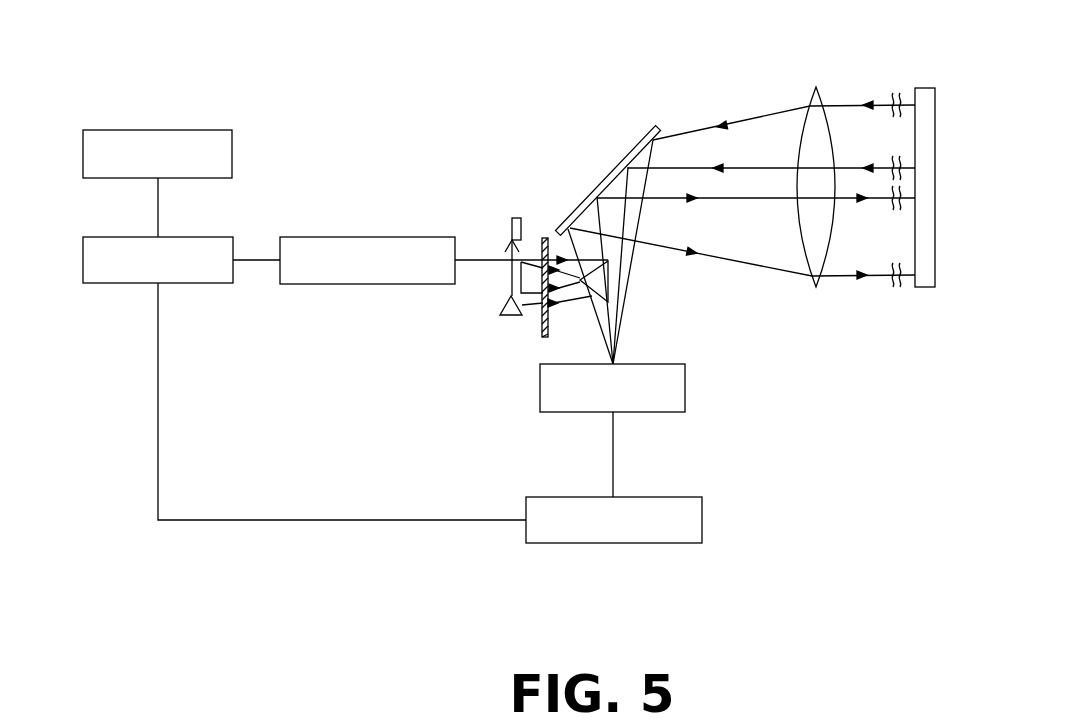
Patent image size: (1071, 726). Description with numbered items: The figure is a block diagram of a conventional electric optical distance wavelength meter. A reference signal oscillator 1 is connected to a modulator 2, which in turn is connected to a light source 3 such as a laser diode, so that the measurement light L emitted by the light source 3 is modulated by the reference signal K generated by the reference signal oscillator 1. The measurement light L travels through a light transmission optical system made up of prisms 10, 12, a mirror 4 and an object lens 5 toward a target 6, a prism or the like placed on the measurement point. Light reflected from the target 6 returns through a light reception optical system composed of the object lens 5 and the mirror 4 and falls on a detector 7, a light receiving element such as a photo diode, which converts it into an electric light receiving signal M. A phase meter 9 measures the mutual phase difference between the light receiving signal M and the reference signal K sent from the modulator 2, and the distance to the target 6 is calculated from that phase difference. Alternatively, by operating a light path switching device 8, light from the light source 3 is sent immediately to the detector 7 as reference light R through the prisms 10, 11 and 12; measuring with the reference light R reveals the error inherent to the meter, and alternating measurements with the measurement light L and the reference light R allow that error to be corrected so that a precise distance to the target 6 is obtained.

The reference signal oscillator 1 is at (83, 137).
The modulator 2 is at (83, 247).
The light source 3 is at (345, 237).
The mirror 4 is at (646, 134).
The object lens 5 is at (812, 100).
The target 6 is at (925, 90).
The detector 7 is at (688, 388).
The light path switching device 8 is at (542, 332).
The phase meter 9 is at (703, 512).
The prism 10 is at (513, 222).
The prism 11 is at (505, 302).
The prism 12 is at (610, 280).
The reference signal K is at (158, 207).
The measurement light L is at (684, 167).
The reference light R is at (577, 300).
The light receiving signal M is at (613, 455).